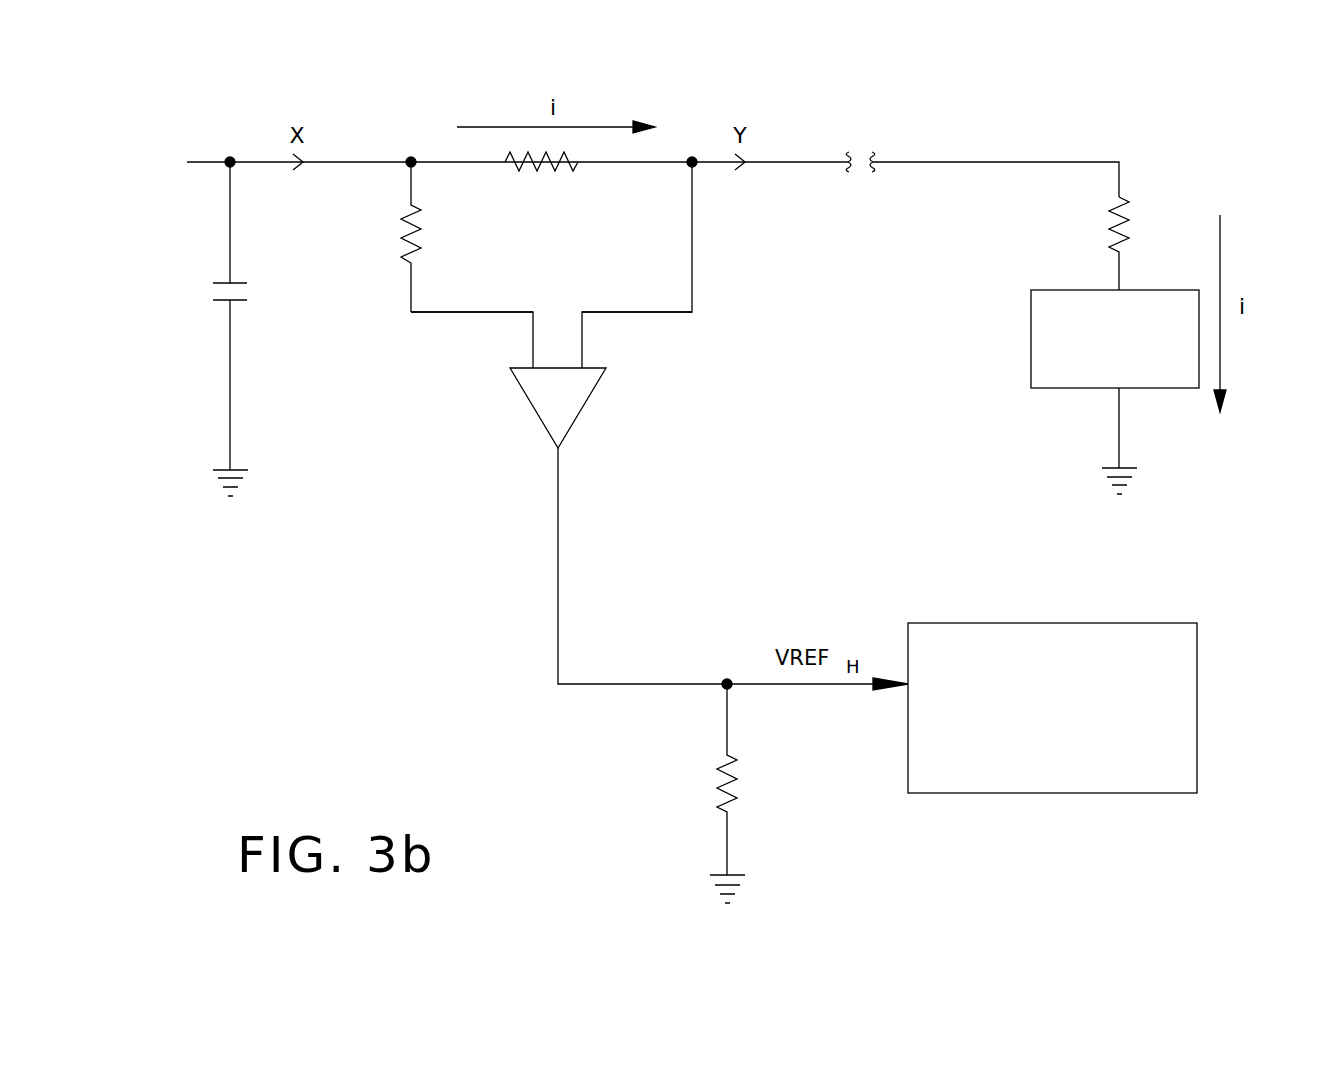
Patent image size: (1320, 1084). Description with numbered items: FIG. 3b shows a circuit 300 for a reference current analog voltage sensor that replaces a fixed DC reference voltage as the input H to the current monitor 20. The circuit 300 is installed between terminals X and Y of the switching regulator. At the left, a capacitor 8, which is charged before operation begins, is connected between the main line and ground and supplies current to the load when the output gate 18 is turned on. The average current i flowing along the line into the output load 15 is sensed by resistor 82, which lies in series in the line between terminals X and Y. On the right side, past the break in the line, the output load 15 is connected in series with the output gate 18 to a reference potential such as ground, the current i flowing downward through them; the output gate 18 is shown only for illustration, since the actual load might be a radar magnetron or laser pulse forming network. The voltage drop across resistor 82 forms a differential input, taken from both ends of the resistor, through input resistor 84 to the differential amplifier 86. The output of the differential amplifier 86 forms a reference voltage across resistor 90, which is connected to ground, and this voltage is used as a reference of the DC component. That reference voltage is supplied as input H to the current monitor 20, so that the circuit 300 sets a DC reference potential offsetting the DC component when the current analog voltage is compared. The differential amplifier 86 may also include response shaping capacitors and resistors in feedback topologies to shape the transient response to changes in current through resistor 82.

The capacitor 8 is at (215, 292).
The input resistor 84 is at (410, 231).
The resistor 82 is at (538, 170).
The circuit 300 is at (720, 302).
The differential amplifier 86 is at (575, 420).
The resistor 90 is at (718, 778).
The current monitor 20 is at (1018, 622).
The output load 15 is at (1119, 200).
The output gate 18 is at (1070, 290).